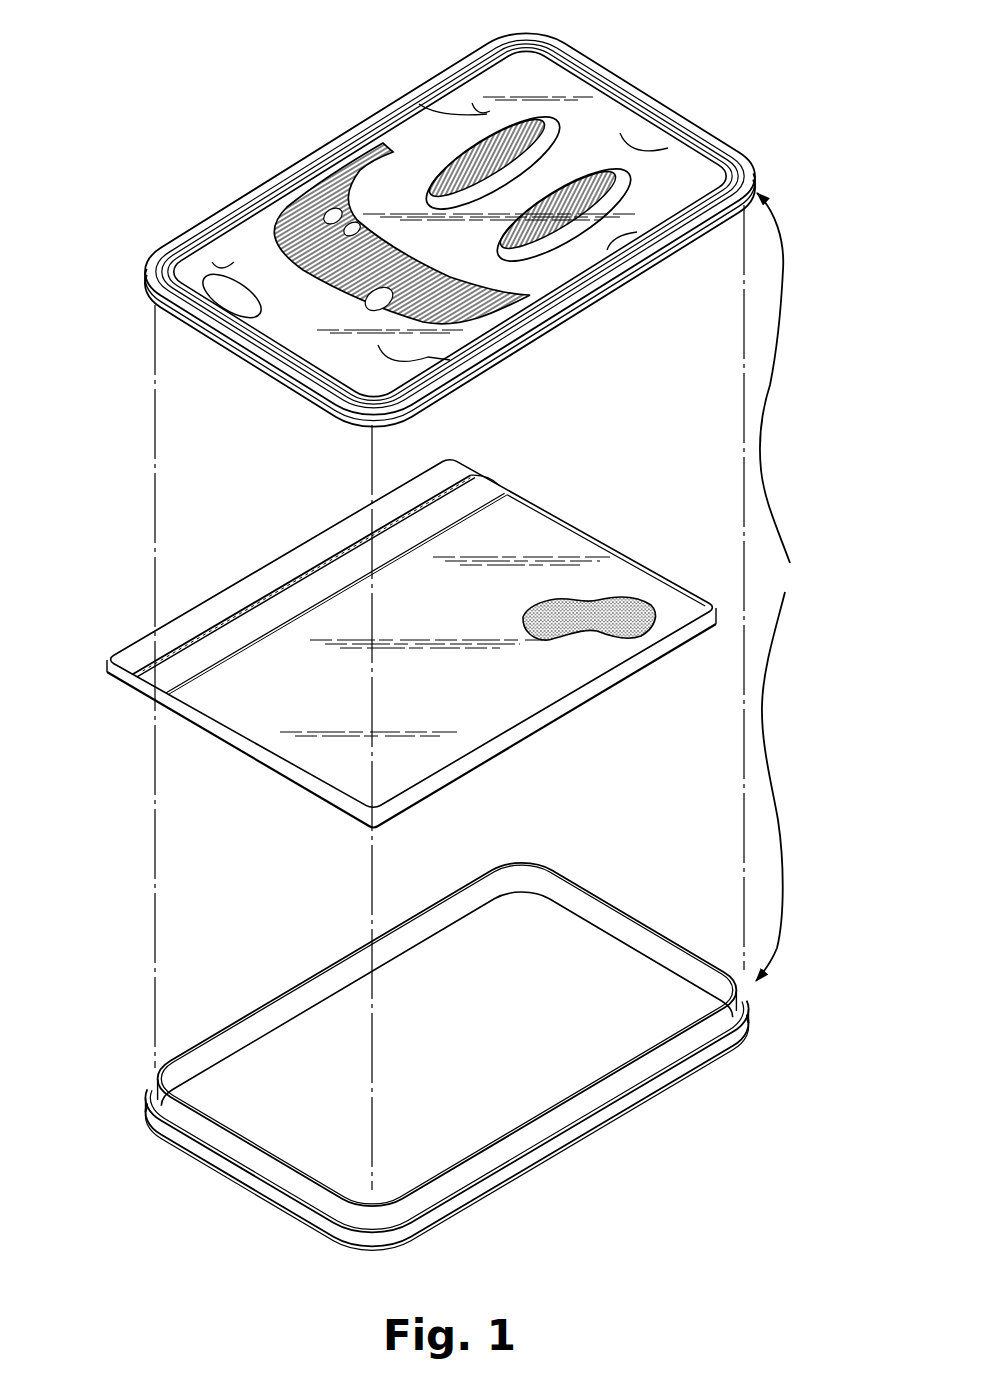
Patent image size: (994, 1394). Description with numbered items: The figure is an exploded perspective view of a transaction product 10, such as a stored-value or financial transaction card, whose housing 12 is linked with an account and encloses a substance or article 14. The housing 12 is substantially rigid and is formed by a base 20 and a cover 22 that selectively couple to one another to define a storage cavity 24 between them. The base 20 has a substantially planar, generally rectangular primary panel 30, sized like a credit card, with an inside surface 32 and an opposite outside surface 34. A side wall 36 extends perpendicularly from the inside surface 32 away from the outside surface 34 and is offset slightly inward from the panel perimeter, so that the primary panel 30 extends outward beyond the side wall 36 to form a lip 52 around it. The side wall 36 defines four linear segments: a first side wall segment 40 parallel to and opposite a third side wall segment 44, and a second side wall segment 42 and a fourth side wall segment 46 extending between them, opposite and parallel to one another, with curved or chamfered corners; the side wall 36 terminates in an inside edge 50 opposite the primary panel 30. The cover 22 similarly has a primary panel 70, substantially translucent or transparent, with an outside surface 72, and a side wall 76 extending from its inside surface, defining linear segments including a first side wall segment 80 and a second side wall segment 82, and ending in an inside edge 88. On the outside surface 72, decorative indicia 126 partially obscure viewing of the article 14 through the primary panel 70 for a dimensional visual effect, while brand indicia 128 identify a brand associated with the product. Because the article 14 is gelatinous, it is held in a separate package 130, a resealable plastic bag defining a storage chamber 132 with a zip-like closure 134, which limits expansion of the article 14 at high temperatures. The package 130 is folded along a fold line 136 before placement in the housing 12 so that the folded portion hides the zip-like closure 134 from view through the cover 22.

The transaction product 10 is at (262, 119).
The housing 12 is at (784, 587).
The article 14 is at (633, 605).
The base 20 is at (216, 1180).
The cover 22 is at (132, 271).
The storage cavity 24 is at (524, 920).
The primary panel 30 is at (712, 1057).
The inside surface 32 is at (562, 1082).
The outside surface 34 is at (493, 1196).
The side wall 36 is at (658, 1058).
The first side wall segment 40 is at (726, 1019).
The second side wall segment 42 is at (278, 1170).
The third side wall segment 44 is at (283, 1019).
The fourth side wall segment 46 is at (645, 937).
The inside edge 50 is at (592, 890).
The lip 52 is at (408, 1220).
The primary panel 70 is at (702, 168).
The outside surface 72 is at (541, 78).
The side wall 76 is at (263, 368).
The first side wall segment 80 is at (673, 247).
The second side wall segment 82 is at (322, 404).
The inside edge 88 is at (587, 309).
The decorative indicia 126 is at (453, 166).
The brand indicia 128 is at (228, 303).
The package 130 is at (126, 650).
The storage chamber 132 is at (591, 605).
The zip-like closure 134 is at (478, 474).
The fold line 136 is at (491, 496).